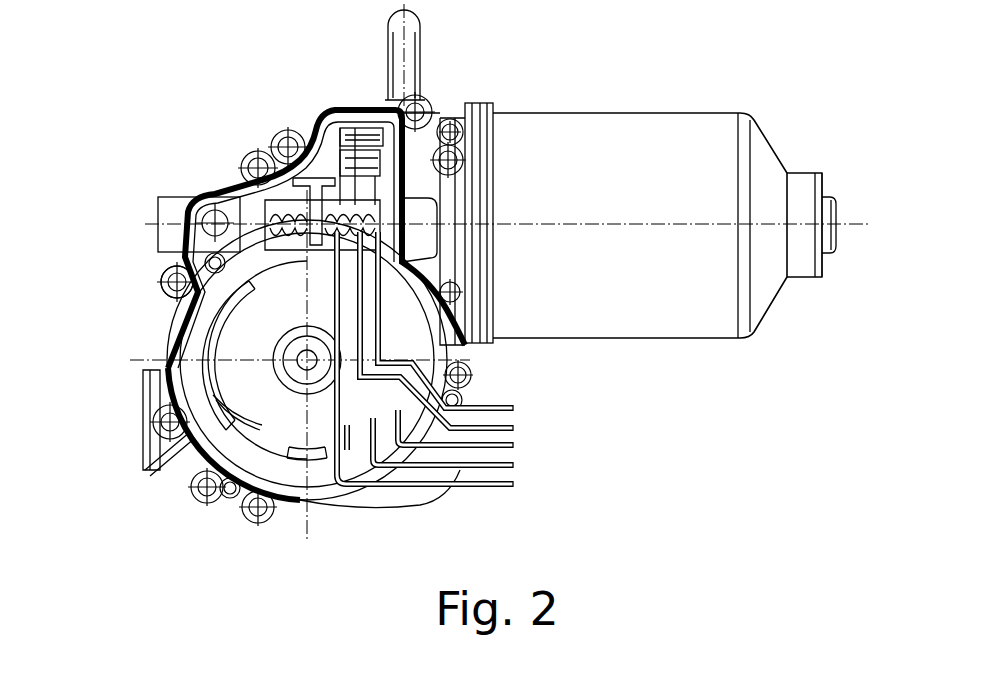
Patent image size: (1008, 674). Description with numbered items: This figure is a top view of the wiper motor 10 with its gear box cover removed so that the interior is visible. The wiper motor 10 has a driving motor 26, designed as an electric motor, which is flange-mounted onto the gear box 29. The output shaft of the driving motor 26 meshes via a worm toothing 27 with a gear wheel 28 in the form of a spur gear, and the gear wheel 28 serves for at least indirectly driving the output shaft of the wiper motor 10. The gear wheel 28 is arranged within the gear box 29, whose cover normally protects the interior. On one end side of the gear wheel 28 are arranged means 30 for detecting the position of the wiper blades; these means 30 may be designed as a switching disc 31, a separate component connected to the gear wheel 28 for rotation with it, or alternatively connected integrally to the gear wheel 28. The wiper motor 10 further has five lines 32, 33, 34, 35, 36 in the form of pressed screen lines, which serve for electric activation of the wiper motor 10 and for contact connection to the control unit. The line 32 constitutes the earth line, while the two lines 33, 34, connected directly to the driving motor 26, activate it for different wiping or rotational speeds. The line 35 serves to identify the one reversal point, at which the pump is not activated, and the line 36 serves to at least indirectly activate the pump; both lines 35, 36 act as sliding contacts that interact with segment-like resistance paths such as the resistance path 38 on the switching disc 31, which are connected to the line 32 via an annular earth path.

The wiper motor 10 is at (622, 96).
The driving motor 26 is at (608, 310).
The worm toothing 27 is at (345, 190).
The gear wheel 28 is at (258, 253).
The gear box 29 is at (188, 238).
The means for detecting the position of the wiper blades 30 is at (230, 432).
The switching disc 31 is at (237, 410).
The line 32 is at (510, 487).
The line 33 is at (498, 406).
The line 34 is at (508, 428).
The line 35 is at (513, 466).
The line 36 is at (513, 446).
The resistance path 38 is at (200, 335).